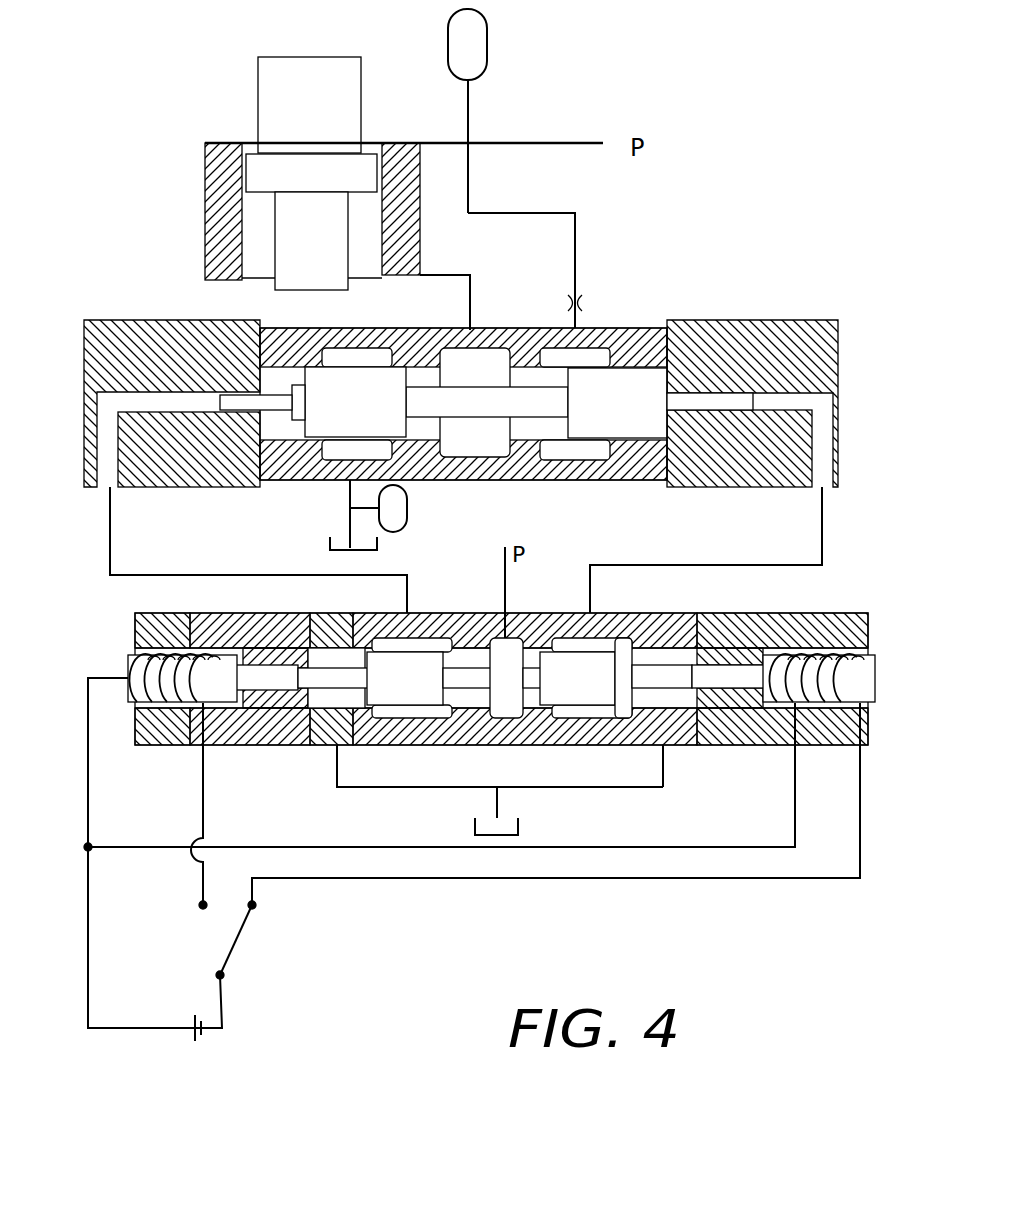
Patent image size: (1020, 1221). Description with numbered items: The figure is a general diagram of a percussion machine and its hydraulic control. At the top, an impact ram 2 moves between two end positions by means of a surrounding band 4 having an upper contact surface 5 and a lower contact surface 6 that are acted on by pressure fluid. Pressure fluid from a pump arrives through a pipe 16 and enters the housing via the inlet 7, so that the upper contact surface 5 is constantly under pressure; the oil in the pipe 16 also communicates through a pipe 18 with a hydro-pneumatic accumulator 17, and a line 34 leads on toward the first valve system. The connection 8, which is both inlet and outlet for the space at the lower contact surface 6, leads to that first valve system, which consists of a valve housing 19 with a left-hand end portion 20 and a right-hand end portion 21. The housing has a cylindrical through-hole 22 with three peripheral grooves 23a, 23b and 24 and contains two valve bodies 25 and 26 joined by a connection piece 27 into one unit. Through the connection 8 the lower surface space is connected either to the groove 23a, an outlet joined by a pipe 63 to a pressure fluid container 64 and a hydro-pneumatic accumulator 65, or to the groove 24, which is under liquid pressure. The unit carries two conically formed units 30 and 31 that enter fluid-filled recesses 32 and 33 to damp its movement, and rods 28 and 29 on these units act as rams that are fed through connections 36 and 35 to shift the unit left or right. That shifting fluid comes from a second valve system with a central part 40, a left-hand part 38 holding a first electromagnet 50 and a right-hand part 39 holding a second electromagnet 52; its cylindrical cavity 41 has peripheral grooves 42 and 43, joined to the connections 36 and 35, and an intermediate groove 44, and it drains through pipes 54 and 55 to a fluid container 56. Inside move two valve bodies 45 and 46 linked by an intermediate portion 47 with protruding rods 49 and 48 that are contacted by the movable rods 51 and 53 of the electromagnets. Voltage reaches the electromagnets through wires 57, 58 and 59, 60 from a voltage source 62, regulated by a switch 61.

The impact ram 2 is at (292, 89).
The surrounding band 4 is at (313, 172).
The upper contact surface 5 is at (247, 153).
The lower contact surface 6 is at (270, 193).
The inlet 7 is at (428, 141).
The inlet and outlet connection 8 is at (473, 305).
The pipe 16 is at (568, 146).
The hydro-pneumatic accumulator 17 is at (470, 38).
The pipe 18 is at (468, 108).
The valve housing 19 is at (613, 328).
The left-hand end portion 20 is at (101, 320).
The right-hand end portion 21 is at (743, 320).
The cylindrical through-hole 22 is at (285, 387).
The peripheral groove 23a is at (377, 360).
The peripheral groove 23b is at (485, 447).
The peripheral groove 24 is at (565, 450).
The valve body 25 is at (348, 405).
The valve body 26 is at (627, 388).
The connection piece 27 is at (480, 397).
The rod 28 is at (215, 378).
The rod 29 is at (722, 403).
The conically formed unit 30 is at (322, 350).
The conically formed unit 31 is at (675, 392).
The recess 32 is at (253, 332).
The recess 33 is at (680, 415).
The conduit 34 is at (578, 218).
The connection 35 is at (818, 473).
The connection 36 is at (112, 450).
The left-hand part 38 is at (215, 613).
The right-hand part 39 is at (743, 613).
The central part 40 is at (372, 640).
The cylindrical cavity 41 is at (362, 695).
The peripheral groove 42 is at (423, 648).
The peripheral groove 43 is at (612, 648).
The intermediate peripheral groove 44 is at (512, 657).
The valve body 45 is at (440, 685).
The valve body 46 is at (610, 685).
The intermediate portion 47 is at (522, 678).
The protruding rod 48 is at (670, 675).
The protruding rod 49 is at (348, 677).
The first electromagnet 50 is at (183, 668).
The movable rod 51 is at (258, 677).
The second electromagnet 52 is at (818, 668).
The movable rod 53 is at (747, 672).
The pipe 54 is at (337, 787).
The pipe 55 is at (668, 767).
The fluid container 56 is at (523, 827).
The wire 57 is at (105, 675).
The wire 58 is at (205, 783).
The wire 59 is at (798, 767).
The wire 60 is at (772, 880).
The switch 61 is at (245, 928).
The voltage source 62 is at (202, 1032).
The pipe 63 is at (348, 493).
The pressure fluid container 64 is at (383, 548).
The hydro-pneumatic accumulator 65 is at (392, 508).